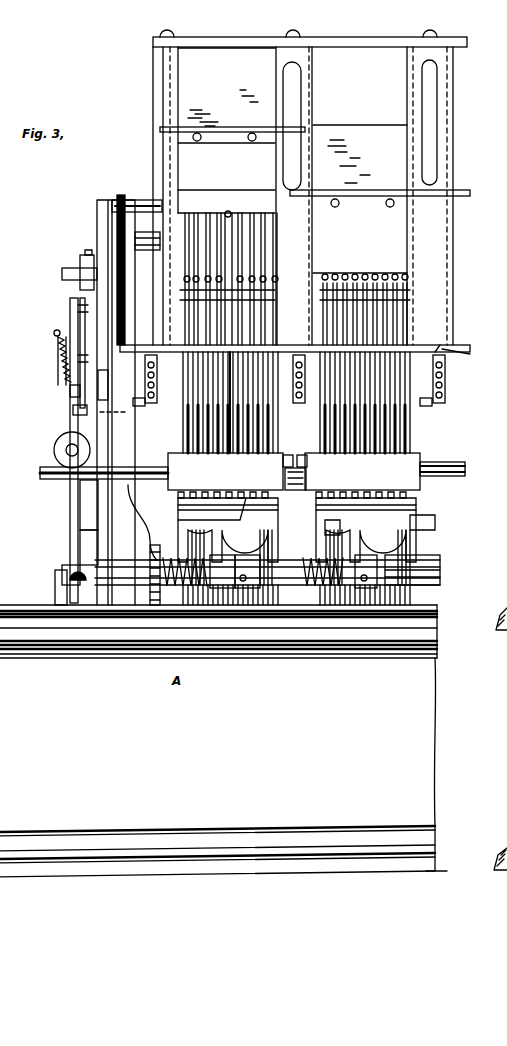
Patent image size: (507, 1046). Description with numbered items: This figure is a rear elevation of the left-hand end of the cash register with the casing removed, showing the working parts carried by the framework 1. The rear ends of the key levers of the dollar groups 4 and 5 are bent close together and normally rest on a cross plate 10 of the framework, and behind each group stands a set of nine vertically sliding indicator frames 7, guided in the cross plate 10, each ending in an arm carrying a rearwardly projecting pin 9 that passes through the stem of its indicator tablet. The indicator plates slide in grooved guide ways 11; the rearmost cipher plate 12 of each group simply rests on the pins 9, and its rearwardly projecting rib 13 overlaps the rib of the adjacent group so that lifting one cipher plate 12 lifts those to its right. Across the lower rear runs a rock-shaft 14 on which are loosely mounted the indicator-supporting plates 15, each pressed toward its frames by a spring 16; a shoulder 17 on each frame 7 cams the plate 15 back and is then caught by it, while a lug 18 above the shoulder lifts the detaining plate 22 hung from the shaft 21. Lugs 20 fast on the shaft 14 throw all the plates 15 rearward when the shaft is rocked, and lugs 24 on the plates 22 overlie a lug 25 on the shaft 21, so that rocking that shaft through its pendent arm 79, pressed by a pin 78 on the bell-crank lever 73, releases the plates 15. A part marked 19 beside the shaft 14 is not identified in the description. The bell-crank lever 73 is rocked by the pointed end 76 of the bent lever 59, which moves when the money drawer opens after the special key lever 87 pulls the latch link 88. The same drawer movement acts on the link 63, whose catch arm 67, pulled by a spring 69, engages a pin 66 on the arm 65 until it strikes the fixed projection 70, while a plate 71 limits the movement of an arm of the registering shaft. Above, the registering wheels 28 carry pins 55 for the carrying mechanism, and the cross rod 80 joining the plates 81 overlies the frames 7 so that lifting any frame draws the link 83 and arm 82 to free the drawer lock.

The framework 1 is at (108, 512).
The group of key levers 4 is at (418, 532).
The group of key levers 5 is at (335, 538).
The indicator frame 7 is at (226, 262).
The rearwardly projecting pin 9 is at (228, 212).
The cross plate 10 is at (175, 352).
The vertical guide ways 11 is at (155, 64).
The cipher indicator plate 12 is at (195, 101).
The rearwardly projecting plate or rib 13 is at (215, 135).
The rock-shaft 14 is at (420, 575).
The indicator-supporting plate 15 is at (297, 541).
The spring 16 is at (173, 556).
The shoulder 17 is at (218, 507).
The lug 18 is at (232, 452).
The coupling 19 is at (245, 555).
The lug 20 is at (222, 555).
The shaft 21 is at (438, 465).
The detaining plate 22 is at (294, 475).
The lug 24 is at (302, 454).
The rearwardly projecting lug 25 is at (292, 490).
The registering wheel 28 is at (155, 400).
The pin 55 is at (140, 407).
The bent lever 59 is at (55, 596).
The link 63 is at (70, 392).
The arm 65 is at (87, 353).
The pin 66 is at (55, 334).
The catch arm 67 is at (70, 313).
The spring 69 is at (58, 358).
The fixed projection 70 is at (70, 272).
The plate 71 is at (113, 378).
The bell-crank lever 73 is at (80, 520).
The pointed rear end 76 is at (73, 411).
The pin 78 is at (80, 500).
The pendent arm 79 is at (92, 498).
The cross rod 80 is at (137, 198).
The plate 81 is at (117, 200).
The arm 82 is at (150, 597).
The link 83 is at (130, 240).
The special key lever 87 is at (82, 555).
The link 88 is at (65, 580).